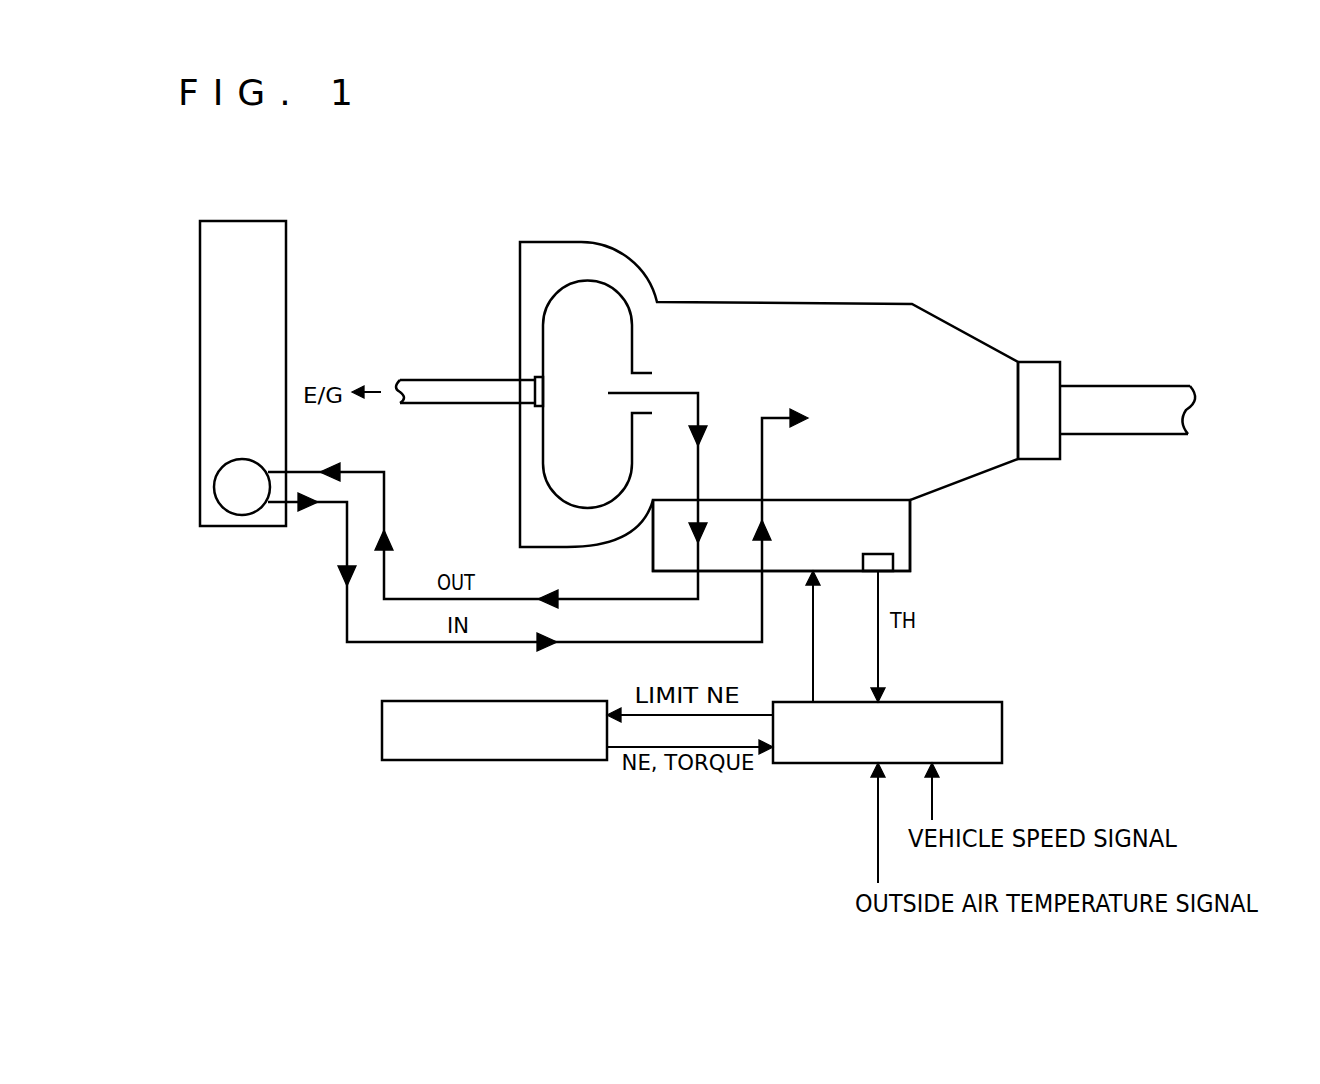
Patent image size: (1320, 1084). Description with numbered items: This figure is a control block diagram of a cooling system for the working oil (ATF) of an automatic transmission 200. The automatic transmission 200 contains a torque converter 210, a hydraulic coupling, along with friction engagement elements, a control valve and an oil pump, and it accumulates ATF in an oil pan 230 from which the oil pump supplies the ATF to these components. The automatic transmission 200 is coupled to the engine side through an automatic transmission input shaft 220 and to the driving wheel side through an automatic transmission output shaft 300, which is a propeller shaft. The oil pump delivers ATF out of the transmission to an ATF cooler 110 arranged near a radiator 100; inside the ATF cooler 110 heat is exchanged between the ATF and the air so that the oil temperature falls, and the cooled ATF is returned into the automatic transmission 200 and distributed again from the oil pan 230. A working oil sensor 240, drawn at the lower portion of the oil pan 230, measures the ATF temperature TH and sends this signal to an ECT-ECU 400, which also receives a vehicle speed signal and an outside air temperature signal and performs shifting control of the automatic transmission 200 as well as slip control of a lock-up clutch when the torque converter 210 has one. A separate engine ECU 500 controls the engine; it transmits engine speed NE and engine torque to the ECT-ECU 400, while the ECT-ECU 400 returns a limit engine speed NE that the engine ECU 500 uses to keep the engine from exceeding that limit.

The radiator 100 is at (286, 255).
The ATF cooler 110 is at (233, 514).
The automatic transmission 200 is at (827, 278).
The torque converter 210 is at (608, 282).
The automatic transmission input shaft 220 is at (415, 380).
The oil pan 230 is at (910, 528).
The working oil sensor 240 is at (885, 558).
The automatic transmission output shaft 300 is at (1133, 386).
The ECT-ECU 400 is at (838, 763).
The engine ECU 500 is at (490, 760).